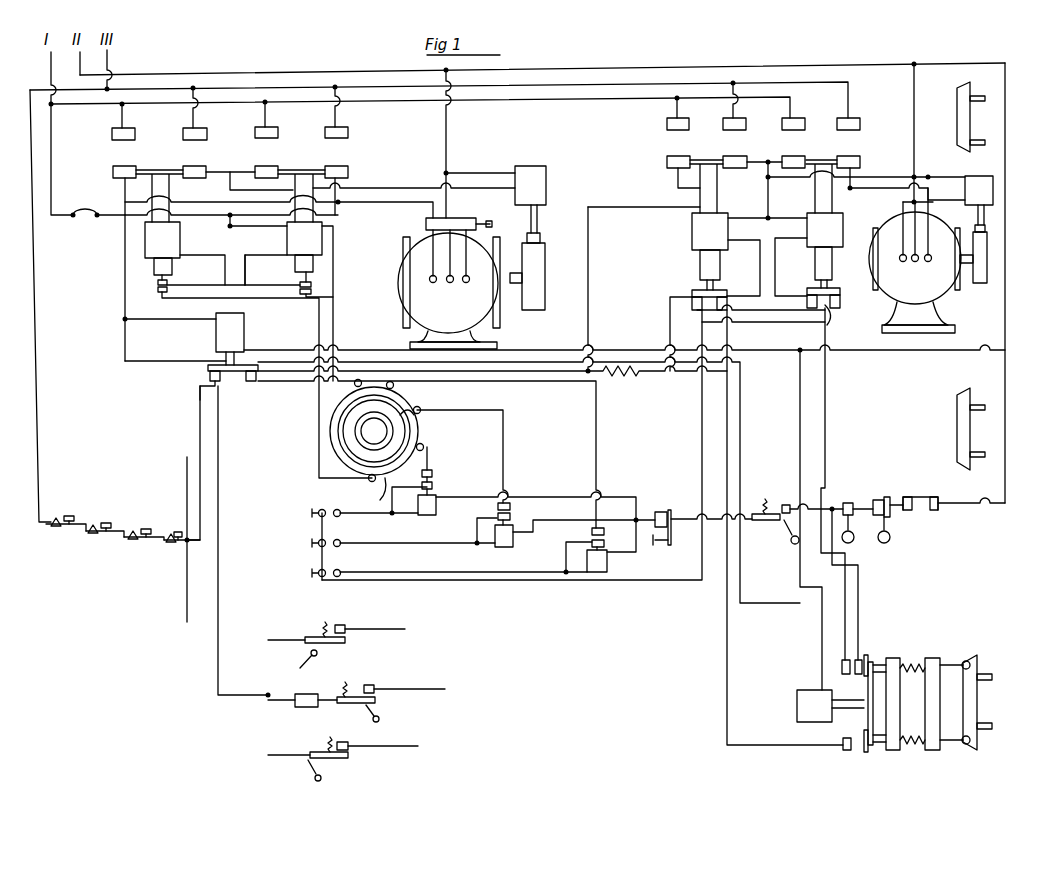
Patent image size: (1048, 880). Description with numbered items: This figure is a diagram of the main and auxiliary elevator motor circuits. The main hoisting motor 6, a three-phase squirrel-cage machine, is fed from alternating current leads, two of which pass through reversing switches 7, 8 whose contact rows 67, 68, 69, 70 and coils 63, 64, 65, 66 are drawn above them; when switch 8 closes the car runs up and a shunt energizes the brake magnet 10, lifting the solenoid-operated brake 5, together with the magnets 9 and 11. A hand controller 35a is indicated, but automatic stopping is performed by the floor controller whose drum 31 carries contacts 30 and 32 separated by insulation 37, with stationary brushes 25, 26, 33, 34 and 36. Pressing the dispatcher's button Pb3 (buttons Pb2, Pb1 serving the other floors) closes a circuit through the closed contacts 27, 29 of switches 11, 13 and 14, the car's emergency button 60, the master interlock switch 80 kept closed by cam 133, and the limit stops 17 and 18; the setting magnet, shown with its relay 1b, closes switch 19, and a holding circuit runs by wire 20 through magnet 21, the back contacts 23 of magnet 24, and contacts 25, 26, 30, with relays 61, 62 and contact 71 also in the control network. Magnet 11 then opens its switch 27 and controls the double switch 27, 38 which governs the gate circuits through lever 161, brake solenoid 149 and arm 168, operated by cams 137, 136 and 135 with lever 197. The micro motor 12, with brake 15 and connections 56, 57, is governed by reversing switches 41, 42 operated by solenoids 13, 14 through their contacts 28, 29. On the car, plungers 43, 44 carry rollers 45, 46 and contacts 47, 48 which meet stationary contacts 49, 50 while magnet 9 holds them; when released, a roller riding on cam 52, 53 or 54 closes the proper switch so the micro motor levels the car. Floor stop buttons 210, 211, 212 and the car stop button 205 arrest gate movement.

The relay coil 63 is at (138, 136).
The relay coil 64 is at (200, 134).
The relay coil 65 is at (275, 128).
The relay coil 66 is at (345, 128).
The contact 67 is at (113, 172).
The reversing switch 7 is at (160, 170).
The contact 68 is at (200, 166).
The contact 69 is at (272, 166).
The up reversing switch 8 is at (301, 188).
The contact 70 is at (342, 166).
The micro motor reversing switch 56 is at (763, 147).
The brake magnet 10 is at (546, 190).
The solenoid-operated brake 5 is at (545, 238).
The hand controller 35a is at (426, 226).
The main hoisting motor 6 is at (449, 289).
The magnet 24 is at (145, 243).
The back contacts 23 is at (158, 287).
The wire 20 is at (275, 230).
The magnet of up reversing switch 21 is at (322, 235).
The contact 71 is at (311, 286).
The magnet 11 is at (242, 332).
The switch 27 is at (250, 381).
The switch 38 is at (215, 381).
The controller contact 32 is at (330, 431).
The brush contact 33 is at (361, 380).
The brush contact 34 is at (394, 386).
The insulation 37 is at (421, 407).
The brush contact 36 is at (416, 419).
The controller drum 31 is at (420, 432).
The brush contact 26 is at (424, 448).
The brush contact 25 is at (369, 482).
The controller contact 30 is at (372, 493).
The switch of setting magnet 19 is at (432, 474).
The relay 1b is at (436, 512).
The dispatcher's button Pb3 is at (342, 505).
The push button Pb2 is at (377, 535).
The push button Pb1 is at (425, 562).
The relay 61 is at (513, 538).
The relay 62 is at (607, 563).
The emergency stop button 60 is at (670, 515).
The master interlock switch 80 is at (786, 505).
The cam 133 is at (790, 545).
The limit stop 17 is at (855, 530).
The limit stop 18 is at (890, 528).
The cam 53 is at (957, 430).
The cam 54 is at (957, 122).
The control unit 57 is at (965, 185).
The micro motor brake 15 is at (987, 240).
The micro motor 12 is at (915, 260).
The reversing switch solenoid 13 is at (692, 232).
The reversing switch solenoid 14 is at (843, 222).
The contact 28 is at (697, 297).
The closed contacts 29 is at (832, 296).
The reversing switch 41 is at (708, 302).
The reversing switch 42 is at (830, 322).
The magnet 9 is at (814, 706).
The stationary contact 49 is at (850, 665).
The plunger contact 47 is at (862, 664).
The plunger 43 is at (868, 662).
The plunger 44 is at (878, 745).
The plunger contact 48 is at (866, 752).
The stationary contact 50 is at (843, 745).
The roller 45 is at (968, 661).
The roller 46 is at (968, 744).
The cam 52 is at (977, 700).
The stop button 212 is at (75, 500).
The stop button 211 is at (113, 510).
The stop button 210 is at (153, 516).
The stop button 205 is at (180, 530).
The spring-held lever 161 is at (340, 643).
The cam 137 is at (298, 668).
The brake solenoid 149 is at (300, 707).
The pivoted arm 168 is at (350, 697).
The cam 136 is at (378, 712).
The switch lever 197 is at (340, 758).
The cam 135 is at (322, 778).